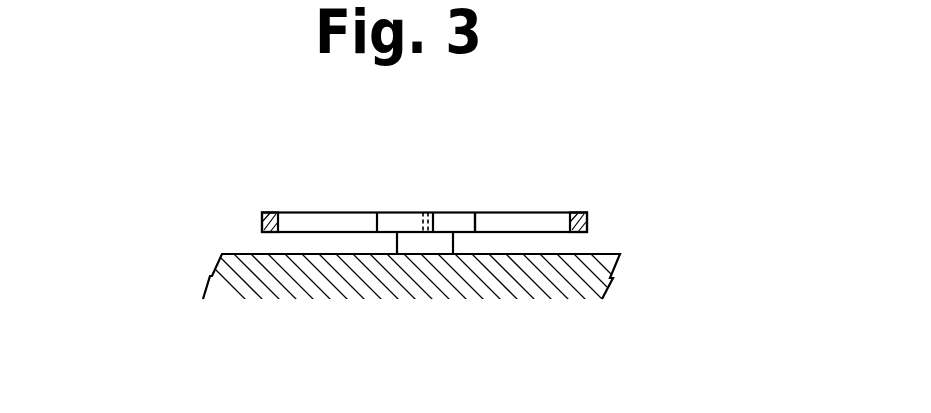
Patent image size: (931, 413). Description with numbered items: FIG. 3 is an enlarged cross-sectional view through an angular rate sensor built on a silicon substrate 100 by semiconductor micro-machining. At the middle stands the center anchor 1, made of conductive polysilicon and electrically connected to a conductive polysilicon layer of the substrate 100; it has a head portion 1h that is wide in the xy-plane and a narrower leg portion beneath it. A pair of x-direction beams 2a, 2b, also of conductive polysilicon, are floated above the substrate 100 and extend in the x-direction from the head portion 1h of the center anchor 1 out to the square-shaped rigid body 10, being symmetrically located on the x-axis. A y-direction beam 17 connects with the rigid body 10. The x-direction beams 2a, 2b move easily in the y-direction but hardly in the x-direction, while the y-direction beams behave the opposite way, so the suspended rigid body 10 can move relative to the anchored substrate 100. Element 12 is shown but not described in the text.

The center anchor 1 is at (459, 212).
The head portion 1h is at (437, 212).
The x-direction beam 2a is at (312, 212).
The x-direction beam 2b is at (537, 212).
The rigid body 10 is at (587, 221).
The spacer projection 12 is at (445, 248).
The y-direction beam 17 is at (432, 212).
The silicon substrate 100 is at (240, 252).